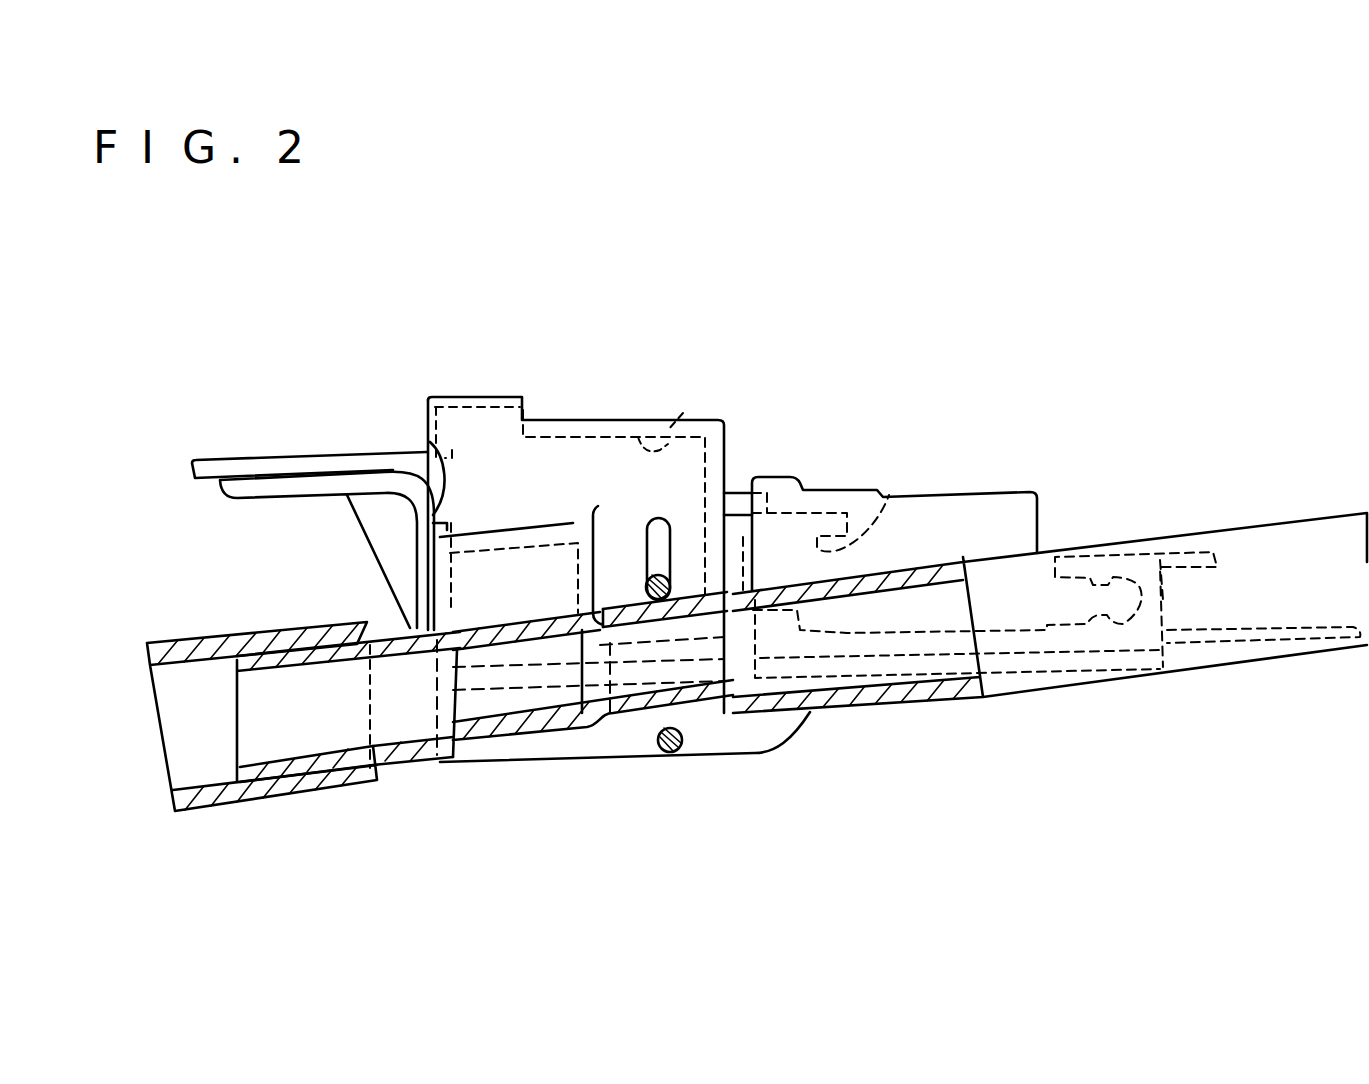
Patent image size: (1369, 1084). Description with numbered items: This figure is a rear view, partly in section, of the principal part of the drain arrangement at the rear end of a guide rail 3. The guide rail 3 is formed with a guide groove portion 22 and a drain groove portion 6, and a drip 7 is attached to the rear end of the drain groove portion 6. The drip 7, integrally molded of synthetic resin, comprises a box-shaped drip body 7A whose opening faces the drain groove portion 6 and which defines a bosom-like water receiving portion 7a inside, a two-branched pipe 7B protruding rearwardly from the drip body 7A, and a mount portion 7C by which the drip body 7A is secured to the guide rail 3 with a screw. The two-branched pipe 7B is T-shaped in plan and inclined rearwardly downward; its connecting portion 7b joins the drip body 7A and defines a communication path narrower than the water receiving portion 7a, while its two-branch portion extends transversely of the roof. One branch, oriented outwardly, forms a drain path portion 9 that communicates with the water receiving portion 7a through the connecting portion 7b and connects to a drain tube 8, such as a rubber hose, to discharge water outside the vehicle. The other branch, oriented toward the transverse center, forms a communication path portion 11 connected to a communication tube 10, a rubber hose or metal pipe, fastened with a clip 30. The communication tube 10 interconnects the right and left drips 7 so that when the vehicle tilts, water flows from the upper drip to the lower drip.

The guide rail 3 is at (340, 480).
The drain groove portion 6 is at (430, 445).
The drip 7 is at (657, 332).
The drip body 7A is at (613, 480).
The two-branched pipe 7B is at (545, 614).
The mount portion 7C is at (247, 460).
The water receiving portion 7a is at (683, 413).
The connecting portion 7b is at (497, 562).
The drain tube 8 is at (194, 652).
The drain path portion 9 is at (293, 657).
The communication tube 10 is at (931, 568).
The communication path portion 11 is at (668, 597).
The guide groove portion 22 is at (889, 495).
The clip 30 is at (670, 753).